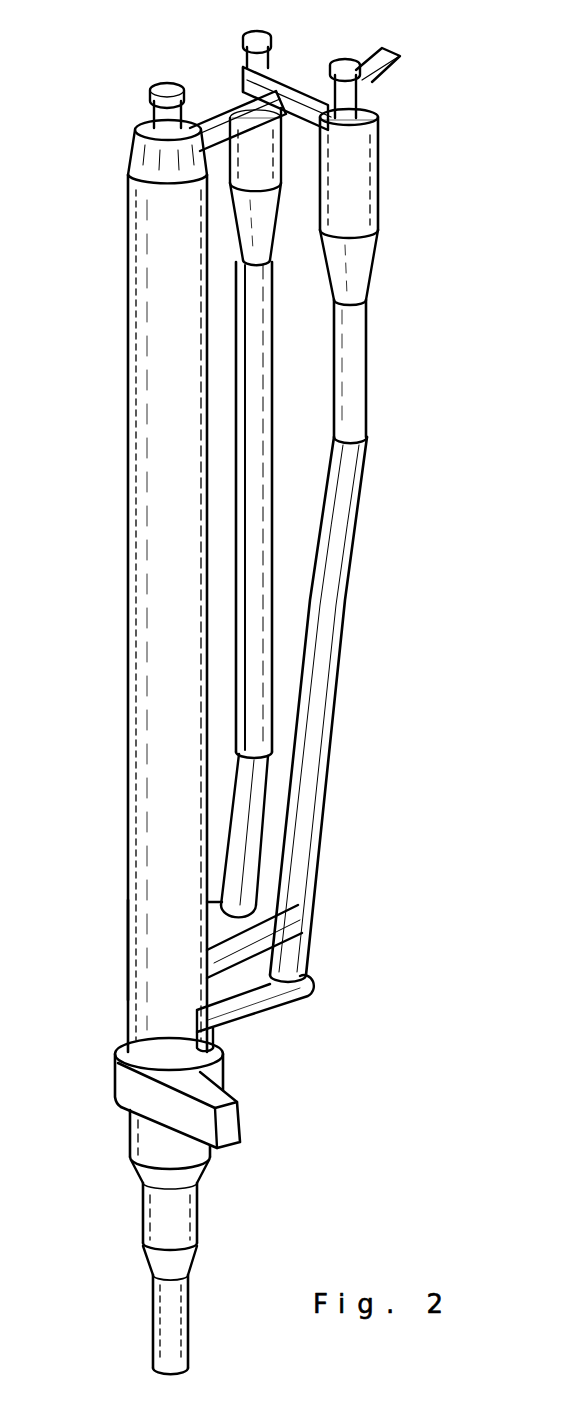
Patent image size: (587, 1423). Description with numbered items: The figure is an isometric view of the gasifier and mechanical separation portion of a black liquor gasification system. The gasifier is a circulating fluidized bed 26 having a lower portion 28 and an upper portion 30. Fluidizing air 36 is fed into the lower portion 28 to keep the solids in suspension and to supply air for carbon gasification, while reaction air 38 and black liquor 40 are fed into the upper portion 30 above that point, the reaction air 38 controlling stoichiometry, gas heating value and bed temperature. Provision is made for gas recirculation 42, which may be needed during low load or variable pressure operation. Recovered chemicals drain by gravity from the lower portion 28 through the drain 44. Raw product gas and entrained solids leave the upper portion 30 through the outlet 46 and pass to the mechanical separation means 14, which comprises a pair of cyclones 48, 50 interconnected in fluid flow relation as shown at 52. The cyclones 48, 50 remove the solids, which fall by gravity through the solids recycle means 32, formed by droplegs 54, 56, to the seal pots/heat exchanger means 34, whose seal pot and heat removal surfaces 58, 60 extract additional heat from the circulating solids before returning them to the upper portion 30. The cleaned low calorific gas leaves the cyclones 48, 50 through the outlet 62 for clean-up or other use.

The mechanical separation means 14 is at (300, 150).
The circulating fluidized bed 26 is at (123, 598).
The lower portion 28 is at (200, 1213).
The upper portion 30 is at (128, 950).
The solids recycle means 32 is at (280, 450).
The seal pots/heat exchanger means 34 is at (268, 958).
The fluidizing air 36 is at (145, 1200).
The reaction air 38 is at (222, 1063).
The black liquor 40 is at (215, 1040).
The gas recirculation 42 is at (167, 1110).
The drain 44 is at (180, 1325).
The outlet 46 is at (212, 112).
The cyclone 48 is at (270, 228).
The cyclone 50 is at (368, 249).
The interconnection 52 is at (287, 72).
The dropleg 54 is at (270, 394).
The dropleg 56 is at (367, 366).
The seal pot and heat removal surface 58 is at (238, 914).
The seal pot and heat removal surface 60 is at (307, 998).
The outlet 62 is at (396, 66).